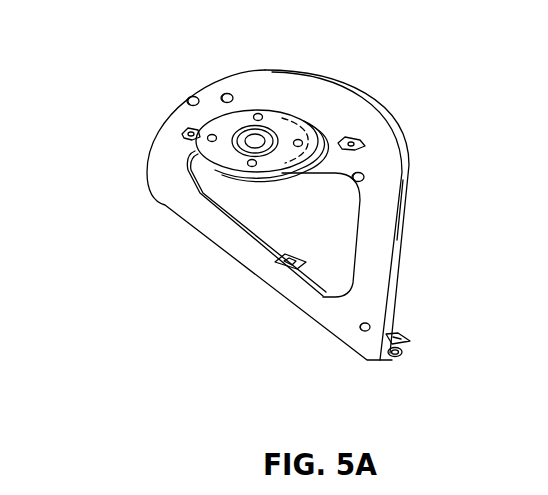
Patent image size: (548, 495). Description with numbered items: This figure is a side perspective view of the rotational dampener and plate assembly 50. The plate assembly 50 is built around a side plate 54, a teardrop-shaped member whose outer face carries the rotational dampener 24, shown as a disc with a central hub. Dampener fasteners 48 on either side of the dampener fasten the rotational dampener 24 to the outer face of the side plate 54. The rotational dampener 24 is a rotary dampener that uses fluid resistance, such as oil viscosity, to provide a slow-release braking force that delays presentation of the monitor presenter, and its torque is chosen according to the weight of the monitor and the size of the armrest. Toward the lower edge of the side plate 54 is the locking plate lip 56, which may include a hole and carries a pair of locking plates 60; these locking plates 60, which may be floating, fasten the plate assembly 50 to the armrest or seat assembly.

The rotational dampener 24 is at (284, 110).
The dampener fasteners 48 is at (182, 130).
The plate assembly 50 is at (177, 68).
The side plate 54 is at (390, 187).
The locking plate lip 56 is at (401, 357).
The locking plates 60 is at (277, 262).